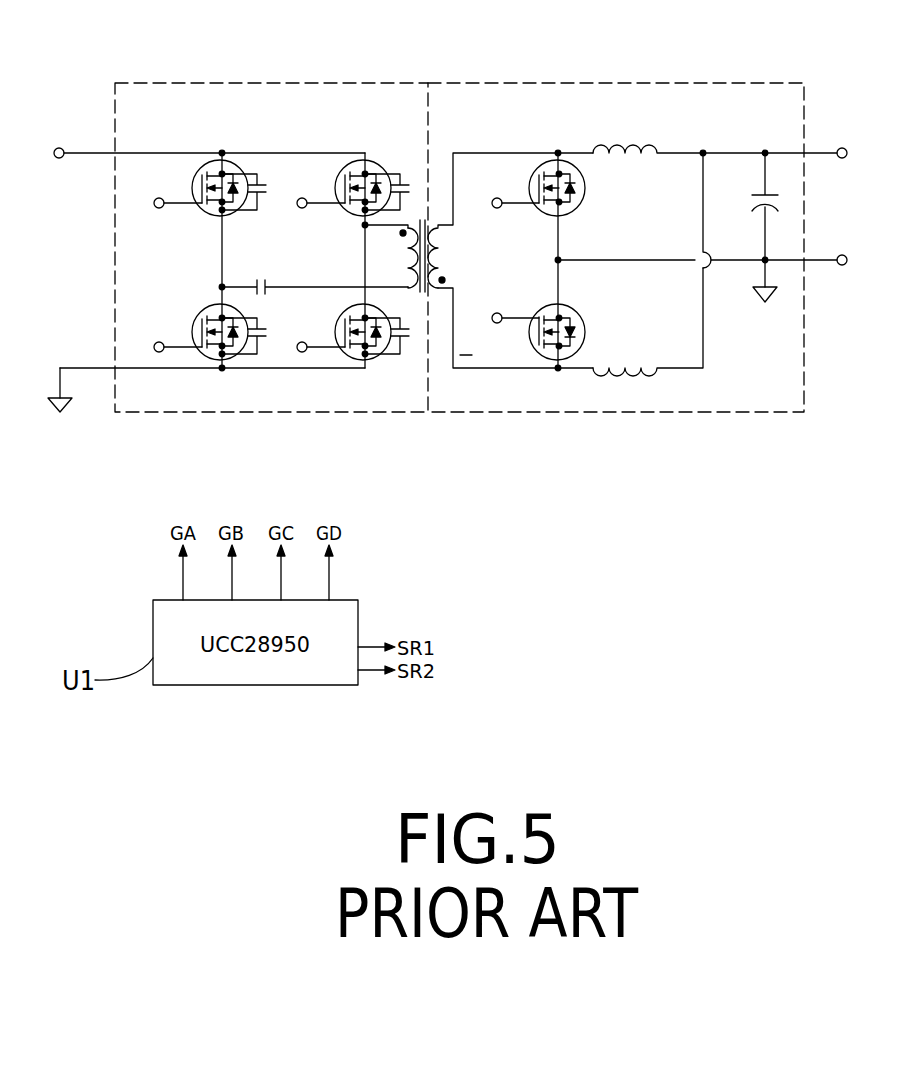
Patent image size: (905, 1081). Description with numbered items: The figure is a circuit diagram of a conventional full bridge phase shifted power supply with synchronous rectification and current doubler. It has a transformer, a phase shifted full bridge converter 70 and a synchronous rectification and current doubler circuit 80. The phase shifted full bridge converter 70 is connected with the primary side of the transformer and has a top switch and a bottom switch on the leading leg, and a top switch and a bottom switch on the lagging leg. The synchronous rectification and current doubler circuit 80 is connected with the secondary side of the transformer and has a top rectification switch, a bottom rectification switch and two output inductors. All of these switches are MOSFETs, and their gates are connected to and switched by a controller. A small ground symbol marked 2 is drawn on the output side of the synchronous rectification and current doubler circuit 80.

The phase shifted full bridge converter 70 is at (240, 83).
The synchronous rectification and current doubler circuit 80 is at (575, 83).
The secondary ground 2 is at (771, 284).